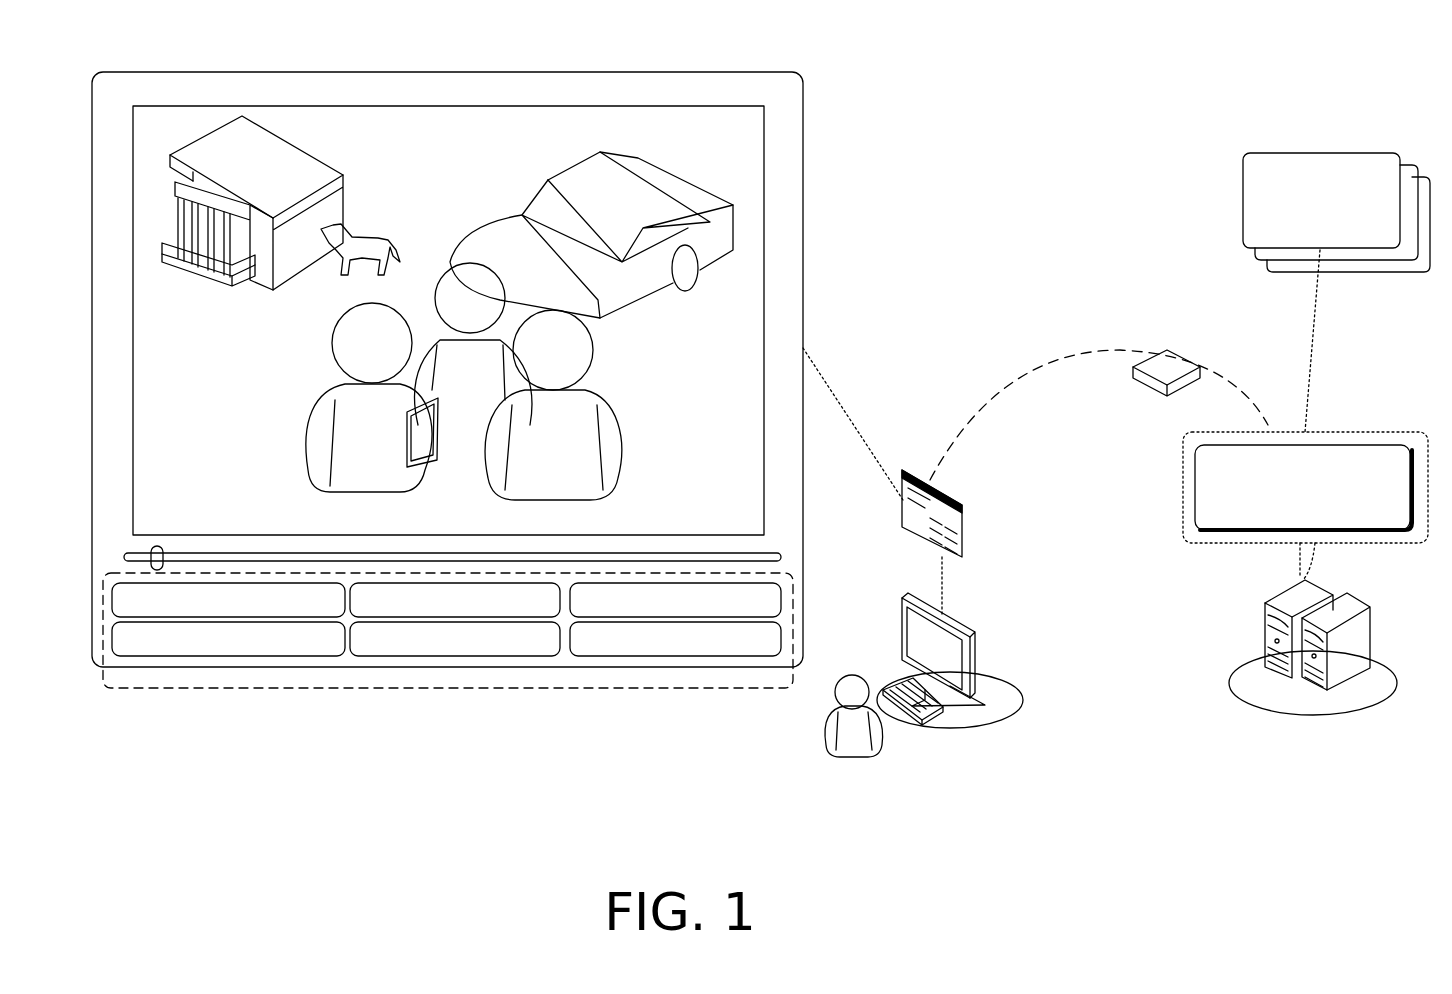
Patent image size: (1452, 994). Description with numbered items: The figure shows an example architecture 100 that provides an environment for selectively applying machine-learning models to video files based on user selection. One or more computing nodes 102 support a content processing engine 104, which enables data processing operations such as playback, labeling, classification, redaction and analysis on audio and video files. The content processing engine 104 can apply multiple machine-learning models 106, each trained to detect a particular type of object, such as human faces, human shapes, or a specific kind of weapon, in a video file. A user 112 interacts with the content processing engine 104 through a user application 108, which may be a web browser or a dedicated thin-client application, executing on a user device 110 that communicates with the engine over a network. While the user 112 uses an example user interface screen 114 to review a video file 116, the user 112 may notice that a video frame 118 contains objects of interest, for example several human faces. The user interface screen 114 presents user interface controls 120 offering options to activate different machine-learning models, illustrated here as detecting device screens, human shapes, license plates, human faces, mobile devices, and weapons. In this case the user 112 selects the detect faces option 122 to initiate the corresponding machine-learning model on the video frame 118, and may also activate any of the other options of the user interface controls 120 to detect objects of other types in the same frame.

The architecture 100 is at (165, 52).
The computing nodes 102 is at (1358, 605).
The content processing engine 104 is at (1305, 487).
The machine-learning models 106 is at (1336, 212).
The user application 108 is at (948, 502).
The user device 110 is at (965, 625).
The user 112 is at (858, 757).
The user interface screen 114 is at (766, 73).
The video file 116 is at (1160, 388).
The video frame 118 is at (655, 107).
The user interface controls 120 is at (448, 667).
The detect faces option 122 is at (283, 657).